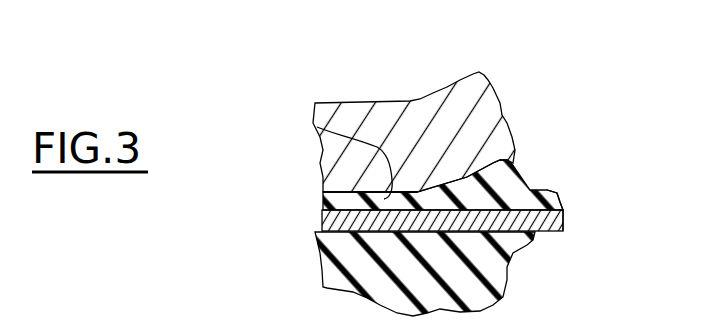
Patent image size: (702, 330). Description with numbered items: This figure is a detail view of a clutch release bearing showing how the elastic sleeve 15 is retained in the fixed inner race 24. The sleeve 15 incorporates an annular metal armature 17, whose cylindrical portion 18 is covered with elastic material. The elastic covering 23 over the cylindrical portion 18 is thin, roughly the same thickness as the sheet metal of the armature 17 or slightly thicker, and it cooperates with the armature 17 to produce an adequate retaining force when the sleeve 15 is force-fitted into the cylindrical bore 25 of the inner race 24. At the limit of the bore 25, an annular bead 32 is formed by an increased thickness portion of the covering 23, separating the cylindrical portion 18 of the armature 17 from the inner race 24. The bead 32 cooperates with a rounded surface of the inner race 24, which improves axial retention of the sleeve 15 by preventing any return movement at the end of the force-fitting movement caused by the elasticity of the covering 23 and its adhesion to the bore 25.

The elastic sleeve 15 is at (353, 253).
The annular metal armature 17 is at (323, 210).
The cylindrical portion 18 is at (556, 192).
The elastic covering 23 is at (333, 192).
The inner race 24 is at (408, 101).
The cylindrical bore 25 is at (317, 127).
The annular bead 32 is at (513, 172).